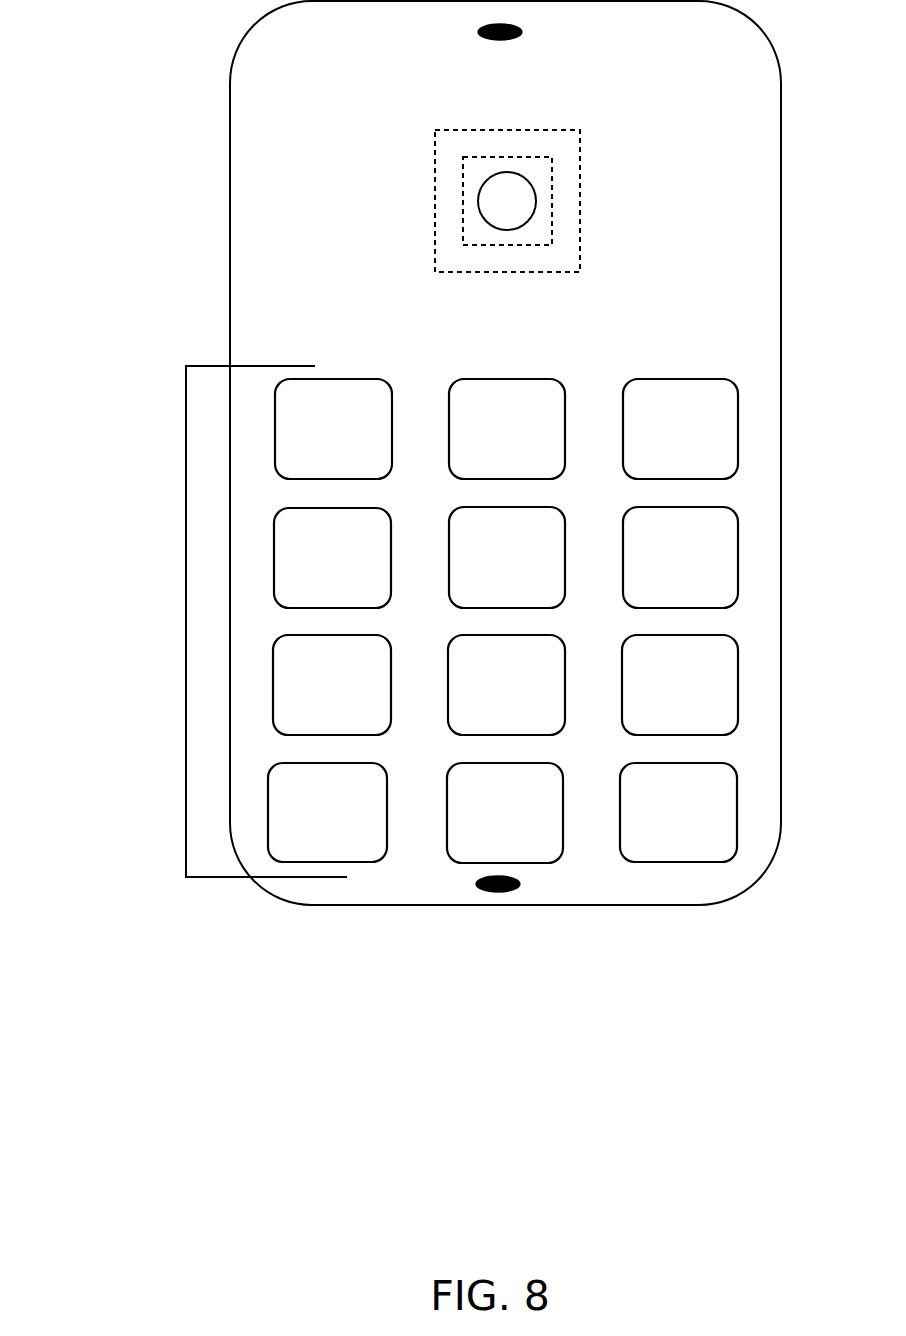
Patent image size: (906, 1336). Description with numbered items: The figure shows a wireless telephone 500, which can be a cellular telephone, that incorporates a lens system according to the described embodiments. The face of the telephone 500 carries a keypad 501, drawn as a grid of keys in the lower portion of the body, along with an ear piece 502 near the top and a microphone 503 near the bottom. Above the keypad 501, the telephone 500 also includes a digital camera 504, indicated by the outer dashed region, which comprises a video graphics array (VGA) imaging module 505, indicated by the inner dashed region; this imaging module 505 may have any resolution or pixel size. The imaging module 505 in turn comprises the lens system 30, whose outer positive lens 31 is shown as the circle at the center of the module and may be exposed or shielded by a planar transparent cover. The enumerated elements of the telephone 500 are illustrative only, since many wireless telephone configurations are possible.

The wireless telephone 500 is at (198, 53).
The keypad 501 is at (186, 579).
The ear piece 502 is at (487, 66).
The microphone 503 is at (492, 891).
The digital camera 504 is at (435, 203).
The video graphics array (VGA) imaging module 505 is at (552, 203).
The lens system 30 is at (444, 183).
The outer positive lens 31 is at (507, 201).